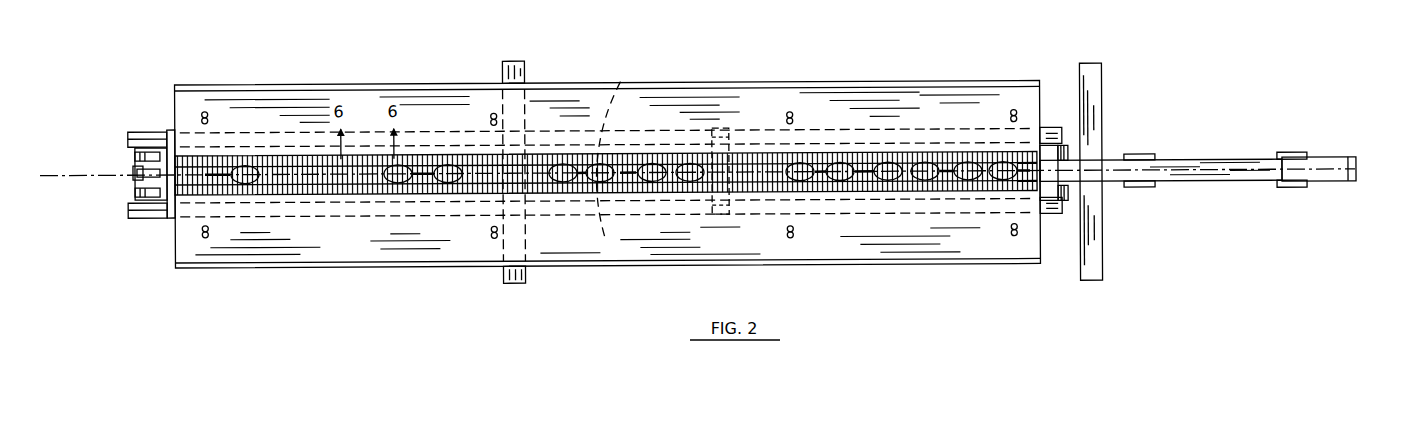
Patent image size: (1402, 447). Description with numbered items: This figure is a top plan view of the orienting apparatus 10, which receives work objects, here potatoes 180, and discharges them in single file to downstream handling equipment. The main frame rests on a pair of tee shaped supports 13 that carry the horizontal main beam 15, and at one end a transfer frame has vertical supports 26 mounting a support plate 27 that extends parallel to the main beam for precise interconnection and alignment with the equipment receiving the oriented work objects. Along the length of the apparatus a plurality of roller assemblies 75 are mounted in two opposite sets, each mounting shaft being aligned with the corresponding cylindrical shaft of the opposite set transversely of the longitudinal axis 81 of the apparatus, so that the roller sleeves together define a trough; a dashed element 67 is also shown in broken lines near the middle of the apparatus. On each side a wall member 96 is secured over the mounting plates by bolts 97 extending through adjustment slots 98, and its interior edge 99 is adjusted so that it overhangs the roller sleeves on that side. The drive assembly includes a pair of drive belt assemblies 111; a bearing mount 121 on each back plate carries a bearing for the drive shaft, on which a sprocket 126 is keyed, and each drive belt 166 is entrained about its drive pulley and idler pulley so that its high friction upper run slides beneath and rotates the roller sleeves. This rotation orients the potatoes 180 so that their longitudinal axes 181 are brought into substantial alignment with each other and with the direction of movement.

The apparatus 10 is at (672, 76).
The tee shaped supports 13 is at (524, 66).
The main beam 15 is at (1332, 170).
The vertical supports 26 is at (1140, 159).
The support plate 27 is at (1215, 165).
The drive connector 67 is at (714, 220).
The roller assemblies 75 is at (378, 196).
The longitudinal axis 81 is at (88, 178).
The wall member 96 is at (302, 105).
The bolts 97 is at (200, 114).
The adjustment slots 98 is at (208, 116).
The interior edge 99 is at (258, 165).
The drive belt assemblies 111 is at (135, 157).
The bearing mount 121 is at (138, 136).
The sprocket 126 is at (137, 172).
The drive belt 166 is at (611, 94).
The potatoes 180 is at (400, 166).
The longitudinal axes 181 is at (422, 187).